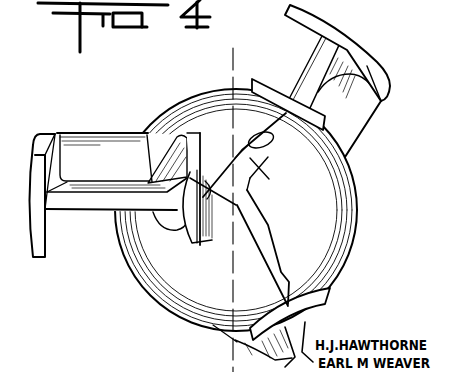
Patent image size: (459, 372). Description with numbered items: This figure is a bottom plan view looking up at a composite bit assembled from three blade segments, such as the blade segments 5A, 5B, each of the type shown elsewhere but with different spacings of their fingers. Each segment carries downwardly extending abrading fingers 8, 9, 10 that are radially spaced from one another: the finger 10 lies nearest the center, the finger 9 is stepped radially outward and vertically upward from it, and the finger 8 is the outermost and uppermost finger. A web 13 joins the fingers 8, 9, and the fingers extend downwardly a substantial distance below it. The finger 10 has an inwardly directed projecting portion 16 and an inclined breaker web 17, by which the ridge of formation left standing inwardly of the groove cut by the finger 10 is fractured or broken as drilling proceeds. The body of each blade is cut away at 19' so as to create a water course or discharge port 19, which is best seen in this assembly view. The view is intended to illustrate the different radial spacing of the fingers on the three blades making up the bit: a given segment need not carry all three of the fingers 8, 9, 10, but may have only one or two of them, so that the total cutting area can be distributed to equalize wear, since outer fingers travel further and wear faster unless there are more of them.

The blade segment 5A is at (165, 109).
The blade segment 5B is at (356, 226).
The abrading finger 8 is at (39, 258).
The abrading finger 9 is at (327, 117).
The abrading finger 10 is at (185, 236).
The web 13 is at (318, 63).
The projecting portion 16 is at (233, 202).
The inclined breaker web 17 is at (207, 198).
The water course or discharge port 19 is at (267, 146).
The cut-away 19' is at (274, 230).